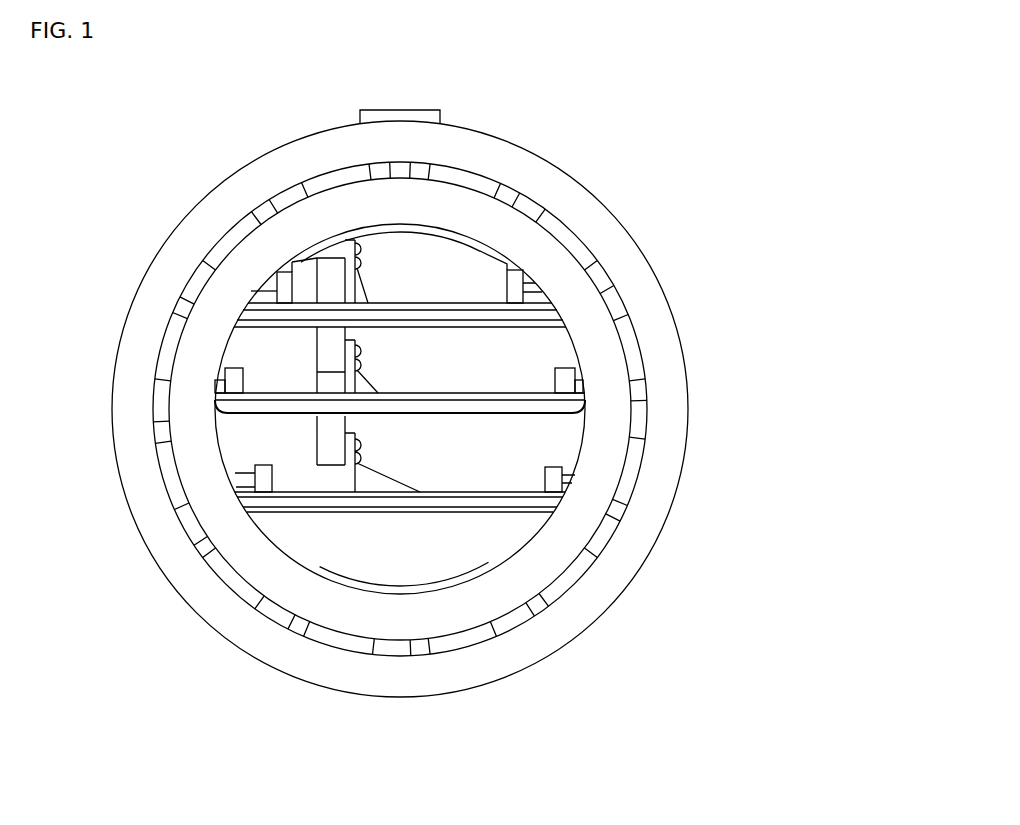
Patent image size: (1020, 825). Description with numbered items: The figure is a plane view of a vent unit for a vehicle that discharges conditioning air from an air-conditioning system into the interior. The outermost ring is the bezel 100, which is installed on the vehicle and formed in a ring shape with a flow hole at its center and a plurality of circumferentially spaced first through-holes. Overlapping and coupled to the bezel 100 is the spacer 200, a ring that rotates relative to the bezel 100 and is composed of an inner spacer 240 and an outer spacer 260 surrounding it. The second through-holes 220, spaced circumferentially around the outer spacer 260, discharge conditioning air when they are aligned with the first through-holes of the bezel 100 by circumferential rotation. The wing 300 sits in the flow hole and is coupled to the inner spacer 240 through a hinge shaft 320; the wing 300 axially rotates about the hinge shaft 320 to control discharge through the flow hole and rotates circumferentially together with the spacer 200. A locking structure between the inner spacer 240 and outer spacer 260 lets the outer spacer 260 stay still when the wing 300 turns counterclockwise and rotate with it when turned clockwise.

The bezel 100 is at (543, 172).
The spacer 200 is at (535, 399).
The second through-holes 220 is at (530, 210).
The inner spacer 240 is at (603, 353).
The outer spacer 260 is at (570, 237).
The wing 300 is at (490, 500).
The hinge shaft 320 is at (553, 480).